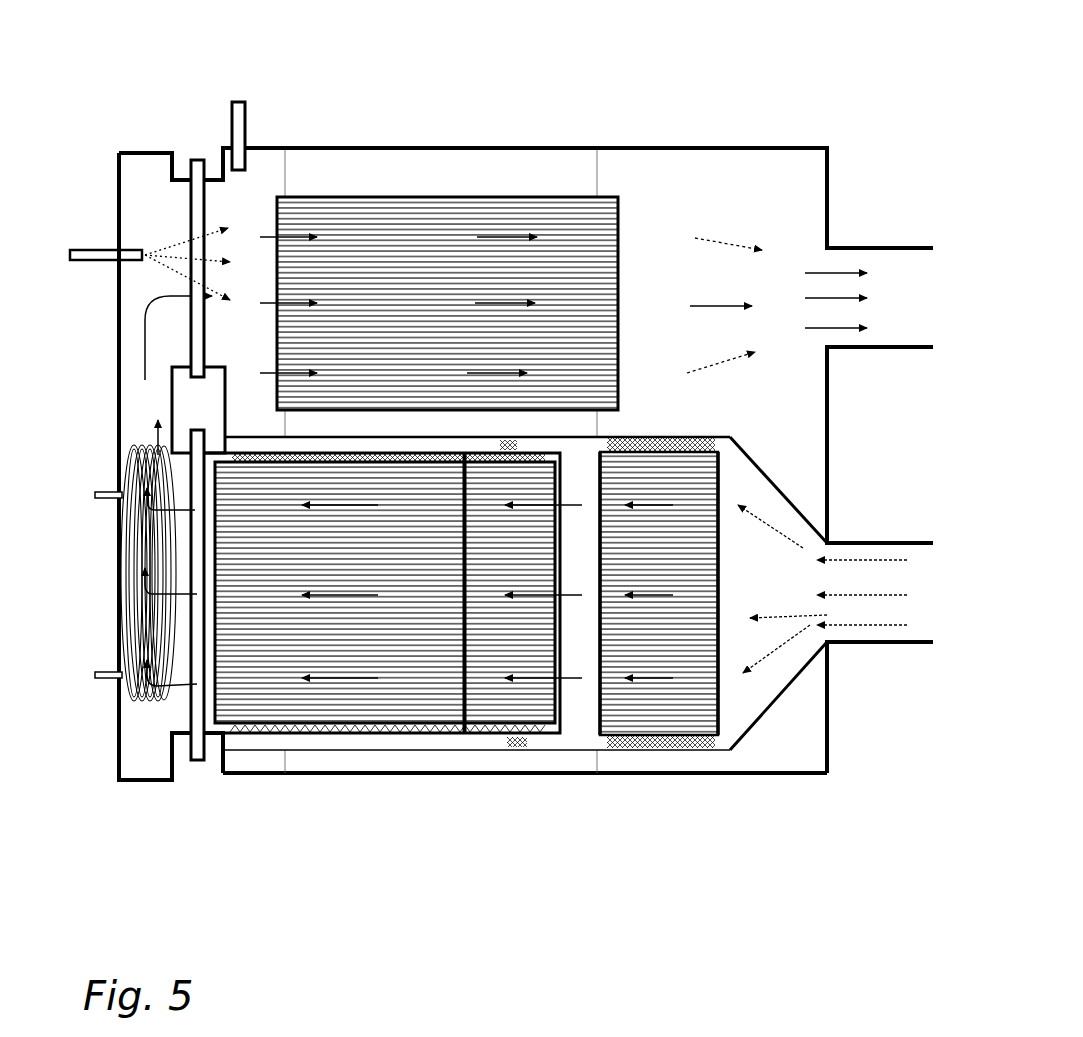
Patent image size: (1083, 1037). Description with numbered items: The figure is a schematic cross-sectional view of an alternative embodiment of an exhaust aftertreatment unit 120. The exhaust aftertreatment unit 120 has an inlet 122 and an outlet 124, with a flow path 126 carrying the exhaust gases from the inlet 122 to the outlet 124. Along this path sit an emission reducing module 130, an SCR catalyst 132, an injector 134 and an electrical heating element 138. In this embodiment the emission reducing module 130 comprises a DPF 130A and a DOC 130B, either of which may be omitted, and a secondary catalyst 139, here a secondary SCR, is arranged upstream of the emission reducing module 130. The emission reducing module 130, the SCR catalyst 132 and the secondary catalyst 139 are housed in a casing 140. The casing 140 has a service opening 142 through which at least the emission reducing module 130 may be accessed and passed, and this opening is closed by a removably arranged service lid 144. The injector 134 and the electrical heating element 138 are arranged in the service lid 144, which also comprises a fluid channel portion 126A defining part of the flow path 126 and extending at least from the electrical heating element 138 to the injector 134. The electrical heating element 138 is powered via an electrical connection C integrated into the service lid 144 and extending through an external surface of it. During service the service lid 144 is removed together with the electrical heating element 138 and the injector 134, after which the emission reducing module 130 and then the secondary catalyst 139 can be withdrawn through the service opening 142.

The exhaust aftertreatment unit 120 is at (526, 430).
The inlet 122 is at (880, 647).
The outlet 124 is at (933, 350).
The flow path 126 is at (757, 488).
The fluid channel portion 126A is at (138, 357).
The emission reducing module 130 is at (393, 667).
The DPF 130A is at (333, 717).
The DOC 130B is at (525, 717).
The SCR catalyst 132 is at (440, 197).
The injector 134 is at (72, 250).
The electrical heating element 138 is at (153, 707).
The secondary catalyst 139 is at (672, 745).
The casing 140 is at (732, 775).
The service opening 142 is at (210, 757).
The service lid 144 is at (122, 782).
The electrical connection C is at (87, 703).